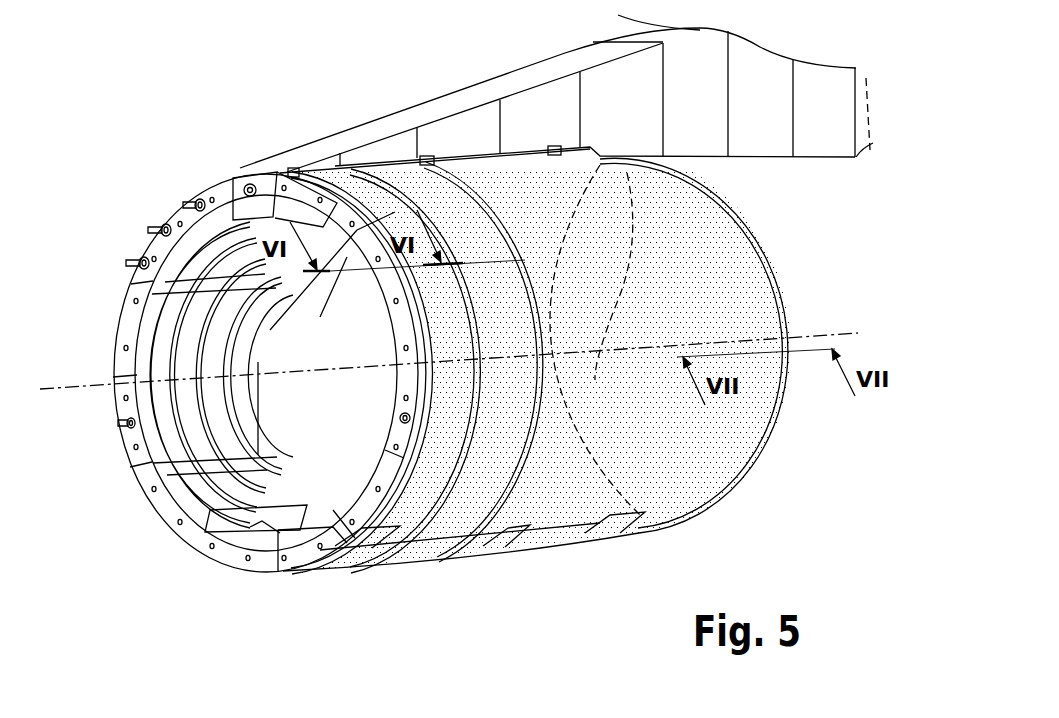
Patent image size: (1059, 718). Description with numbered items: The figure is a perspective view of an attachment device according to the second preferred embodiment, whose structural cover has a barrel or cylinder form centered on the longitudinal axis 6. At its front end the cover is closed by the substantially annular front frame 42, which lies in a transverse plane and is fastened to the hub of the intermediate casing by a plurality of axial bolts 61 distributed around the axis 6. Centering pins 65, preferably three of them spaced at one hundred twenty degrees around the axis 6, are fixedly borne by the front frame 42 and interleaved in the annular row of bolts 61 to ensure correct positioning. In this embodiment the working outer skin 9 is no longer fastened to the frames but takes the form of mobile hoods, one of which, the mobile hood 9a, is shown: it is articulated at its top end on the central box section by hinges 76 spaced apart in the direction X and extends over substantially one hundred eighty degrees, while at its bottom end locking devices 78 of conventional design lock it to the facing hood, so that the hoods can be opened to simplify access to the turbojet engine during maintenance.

The longitudinal axis 6 is at (68, 390).
The working outer skin 9 is at (787, 512).
The mobile hood 9a is at (680, 457).
The front frame 42 is at (243, 560).
The axial bolts 61 is at (142, 256).
The centering pins 65 is at (246, 185).
The hinges 76 is at (553, 146).
The locking devices 78 is at (363, 550).